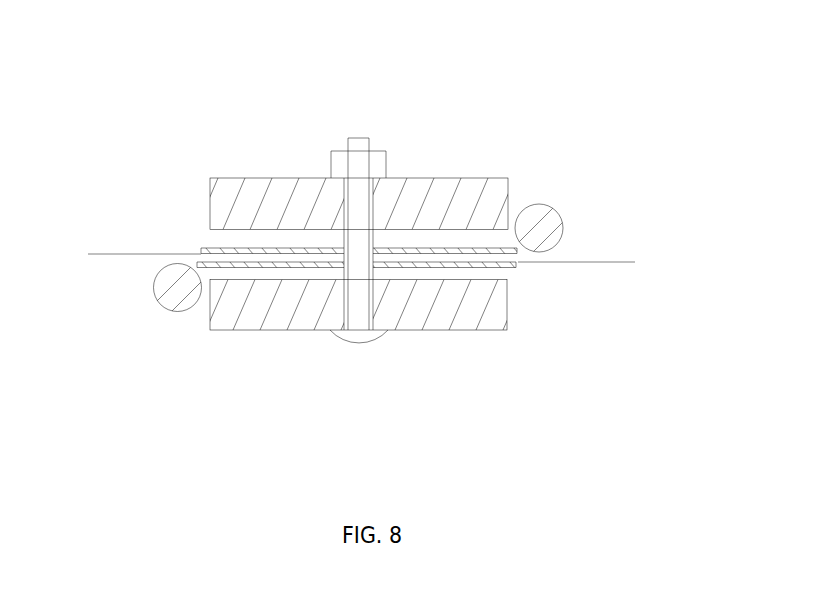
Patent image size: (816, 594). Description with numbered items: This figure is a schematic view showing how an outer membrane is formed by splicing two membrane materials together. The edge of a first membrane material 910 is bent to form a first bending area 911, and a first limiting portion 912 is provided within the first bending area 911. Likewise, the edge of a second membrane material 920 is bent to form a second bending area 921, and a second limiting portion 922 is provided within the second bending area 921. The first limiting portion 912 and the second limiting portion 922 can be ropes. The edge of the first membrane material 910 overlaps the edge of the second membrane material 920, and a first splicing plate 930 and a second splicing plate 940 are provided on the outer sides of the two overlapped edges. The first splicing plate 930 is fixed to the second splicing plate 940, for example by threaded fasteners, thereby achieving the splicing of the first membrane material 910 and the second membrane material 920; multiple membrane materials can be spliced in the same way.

The first membrane material 910 is at (127, 254).
The first bending area 911 is at (445, 251).
The first limiting portion 912 is at (544, 220).
The second membrane material 920 is at (594, 262).
The second bending area 921 is at (254, 265).
The second limiting portion 922 is at (170, 297).
The first splicing plate 930 is at (283, 185).
The second splicing plate 940 is at (483, 316).